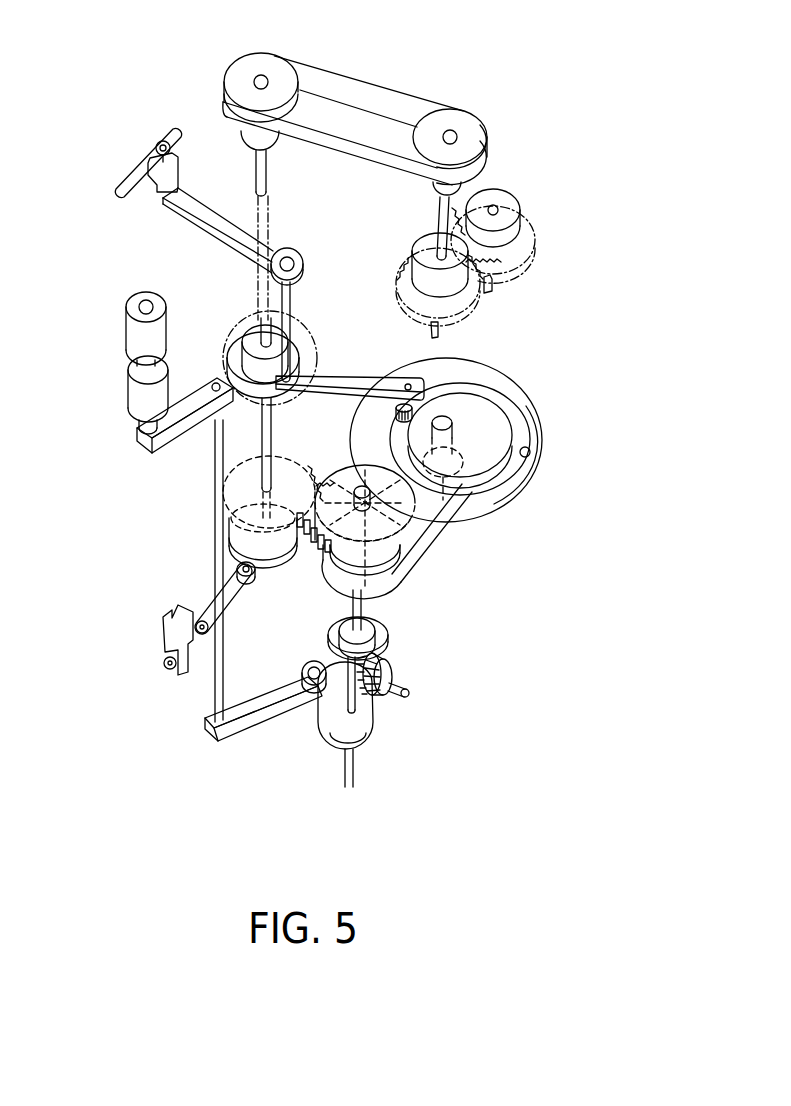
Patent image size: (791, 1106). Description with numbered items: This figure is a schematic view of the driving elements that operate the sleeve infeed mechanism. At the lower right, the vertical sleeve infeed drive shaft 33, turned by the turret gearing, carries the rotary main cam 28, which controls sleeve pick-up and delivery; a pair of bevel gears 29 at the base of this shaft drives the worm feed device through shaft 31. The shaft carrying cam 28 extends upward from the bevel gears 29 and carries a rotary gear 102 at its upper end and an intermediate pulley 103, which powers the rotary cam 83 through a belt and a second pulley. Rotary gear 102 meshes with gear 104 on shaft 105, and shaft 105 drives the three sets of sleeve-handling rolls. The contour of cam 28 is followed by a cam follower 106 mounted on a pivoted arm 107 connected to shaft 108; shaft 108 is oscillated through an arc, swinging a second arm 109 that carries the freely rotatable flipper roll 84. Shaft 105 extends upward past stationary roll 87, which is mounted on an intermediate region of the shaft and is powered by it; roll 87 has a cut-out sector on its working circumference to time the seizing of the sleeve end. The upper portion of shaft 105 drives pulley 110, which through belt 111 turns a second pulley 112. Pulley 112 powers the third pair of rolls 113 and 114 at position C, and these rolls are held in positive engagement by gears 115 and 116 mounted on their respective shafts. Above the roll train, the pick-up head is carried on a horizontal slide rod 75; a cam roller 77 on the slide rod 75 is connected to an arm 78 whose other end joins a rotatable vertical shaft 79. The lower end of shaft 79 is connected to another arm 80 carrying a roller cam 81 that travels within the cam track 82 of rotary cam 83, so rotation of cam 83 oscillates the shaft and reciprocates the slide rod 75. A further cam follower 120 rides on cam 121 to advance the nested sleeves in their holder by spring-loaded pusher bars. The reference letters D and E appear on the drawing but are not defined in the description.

The rotary main cam 28 is at (371, 746).
The bevel gears 29 is at (404, 647).
The shaft 31 is at (410, 690).
The sleeve infeed drive shaft 33 is at (366, 607).
The horizontal slide rod 75 is at (125, 177).
The cam roller 77 is at (157, 143).
The arm 78 is at (218, 245).
The rotatable vertical shaft 79 is at (293, 303).
The arm 80 is at (360, 377).
The roller cam 81 is at (395, 412).
The cam track 82 is at (525, 447).
The rotary cam 83 is at (535, 478).
The flipper roll 84 is at (125, 302).
The stationary roll 87 is at (235, 323).
The rotary gear 102 is at (395, 519).
The intermediate pulley 103 is at (386, 587).
The gear 104 is at (226, 516).
The shaft 105 is at (270, 180).
The cam follower 106 is at (305, 664).
The pivoted arm 107 is at (264, 727).
The shaft 108 is at (212, 563).
The second arm 109 is at (173, 440).
The pulley 110 is at (264, 68).
The belt 111 is at (390, 88).
The second pulley 112 is at (477, 116).
The roll 113 is at (496, 273).
The roll 114 is at (513, 213).
The gear 115 is at (472, 310).
The gear 116 is at (533, 240).
The cam follower 120 is at (252, 578).
The cam 121 is at (290, 562).
The shaft D is at (272, 430).
The shaft E is at (438, 214).